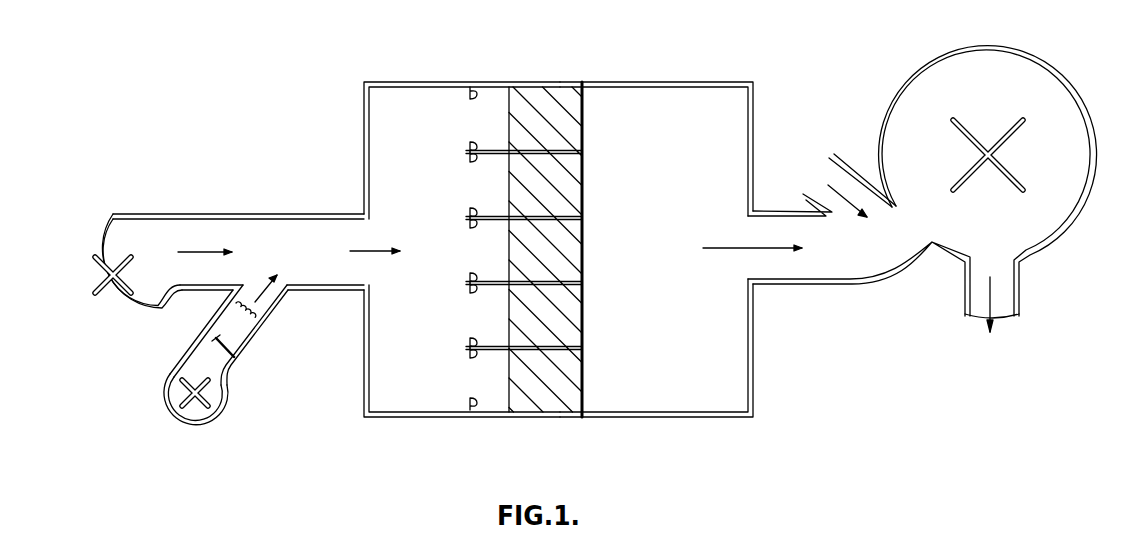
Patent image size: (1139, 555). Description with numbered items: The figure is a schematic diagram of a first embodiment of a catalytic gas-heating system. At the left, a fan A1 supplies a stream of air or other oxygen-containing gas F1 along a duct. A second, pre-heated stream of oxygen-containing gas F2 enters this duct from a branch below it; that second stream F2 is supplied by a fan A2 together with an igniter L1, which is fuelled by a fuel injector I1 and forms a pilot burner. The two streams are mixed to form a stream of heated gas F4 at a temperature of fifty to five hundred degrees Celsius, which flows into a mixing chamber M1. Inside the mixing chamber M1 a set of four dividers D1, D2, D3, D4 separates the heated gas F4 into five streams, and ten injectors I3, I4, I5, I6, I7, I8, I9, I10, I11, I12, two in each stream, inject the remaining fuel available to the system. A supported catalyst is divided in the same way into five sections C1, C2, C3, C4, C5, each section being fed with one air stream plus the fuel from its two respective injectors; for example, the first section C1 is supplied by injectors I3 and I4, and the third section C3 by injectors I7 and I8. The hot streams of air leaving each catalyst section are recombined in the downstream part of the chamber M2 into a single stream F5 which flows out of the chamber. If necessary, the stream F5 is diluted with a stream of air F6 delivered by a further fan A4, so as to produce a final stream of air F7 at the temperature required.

The fan A1 is at (105, 312).
The fan A2 is at (195, 417).
The fan A4 is at (1068, 196).
The stream of air or other oxygen-containing gas F1 is at (205, 240).
The pre-heated stream of oxygen-containing gas F2 is at (250, 308).
The stream of heated gas F4 is at (371, 240).
The recombined stream F5 is at (752, 240).
The stream of air F6 is at (840, 185).
The final stream of air F7 is at (1000, 296).
The mixing chamber M1 is at (393, 270).
The second mixing chamber M2 is at (732, 285).
The catalyst section C1 is at (567, 90).
The catalyst section C2 is at (567, 178).
The catalyst section C3 is at (567, 268).
The catalyst section C4 is at (568, 337).
The catalyst section C5 is at (548, 402).
The divider D1 is at (570, 150).
The divider D2 is at (565, 213).
The divider D3 is at (572, 290).
The divider D4 is at (570, 360).
The igniter L1 is at (248, 326).
The fuel injector I1 is at (232, 345).
The injector I3 is at (485, 102).
The injector I4 is at (485, 139).
The injector I5 is at (485, 169).
The injector I6 is at (485, 207).
The injector I7 is at (485, 236).
The injector I8 is at (485, 272).
The injector I9 is at (485, 301).
The injector I10 is at (491, 338).
The injector I11 is at (491, 366).
The injector I12 is at (491, 403).